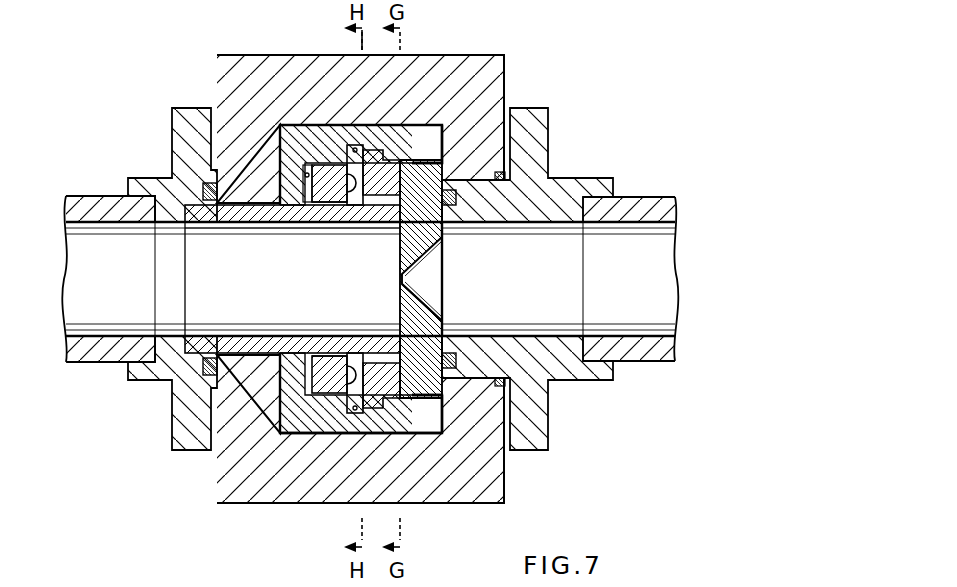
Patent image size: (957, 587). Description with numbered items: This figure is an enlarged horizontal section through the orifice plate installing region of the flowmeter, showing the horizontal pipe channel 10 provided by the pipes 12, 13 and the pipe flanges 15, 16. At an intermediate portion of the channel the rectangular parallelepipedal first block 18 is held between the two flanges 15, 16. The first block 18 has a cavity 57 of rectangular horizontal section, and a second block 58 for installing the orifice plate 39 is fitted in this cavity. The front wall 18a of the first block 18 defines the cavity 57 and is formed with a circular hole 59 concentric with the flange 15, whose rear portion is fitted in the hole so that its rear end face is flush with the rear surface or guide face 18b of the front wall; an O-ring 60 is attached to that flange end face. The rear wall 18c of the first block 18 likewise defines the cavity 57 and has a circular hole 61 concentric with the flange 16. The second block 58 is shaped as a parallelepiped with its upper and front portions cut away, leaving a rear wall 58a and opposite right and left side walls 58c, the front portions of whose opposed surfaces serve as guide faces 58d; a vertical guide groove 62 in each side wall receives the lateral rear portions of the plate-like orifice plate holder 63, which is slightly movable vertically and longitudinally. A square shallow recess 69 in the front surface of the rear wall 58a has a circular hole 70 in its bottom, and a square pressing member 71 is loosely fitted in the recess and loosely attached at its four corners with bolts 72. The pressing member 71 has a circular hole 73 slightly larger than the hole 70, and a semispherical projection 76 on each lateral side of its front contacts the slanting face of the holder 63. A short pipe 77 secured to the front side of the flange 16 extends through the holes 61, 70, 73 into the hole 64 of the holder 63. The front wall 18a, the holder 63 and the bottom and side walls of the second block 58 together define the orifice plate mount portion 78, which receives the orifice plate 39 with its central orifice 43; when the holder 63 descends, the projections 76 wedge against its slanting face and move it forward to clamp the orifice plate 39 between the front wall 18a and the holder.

The horizontal pipe channel 10 is at (82, 248).
The pipe 12 is at (653, 203).
The pipe 13 is at (78, 202).
The pipe flange 15 is at (540, 150).
The pipe flange 16 is at (175, 128).
The first block 18 is at (245, 70).
The front wall 18a is at (485, 412).
The rear surface (guide face) 18b is at (505, 497).
The rear wall 18c is at (243, 392).
The orifice plate 39 is at (448, 255).
The orifice 43 is at (430, 303).
The cavity 57 is at (300, 433).
The second block 58 is at (298, 133).
The rear wall 58a is at (288, 382).
The side walls 58c is at (407, 133).
The guide faces 58d is at (440, 170).
The circular hole 59 is at (487, 185).
The O-ring 60 is at (457, 355).
The circular hole 61 is at (238, 230).
The vertical guide groove 62 is at (355, 147).
The orifice plate holder 63 is at (398, 440).
The hole 64 is at (382, 197).
The square shallow recess 69 is at (306, 173).
The circular hole 70 is at (293, 227).
The square pressing member 71 is at (328, 173).
The bolts 72 is at (322, 362).
The circular hole 73 is at (332, 206).
The semispherical projection 76 is at (365, 365).
The short pipe 77 is at (210, 233).
The orifice plate mount portion 78 is at (460, 278).